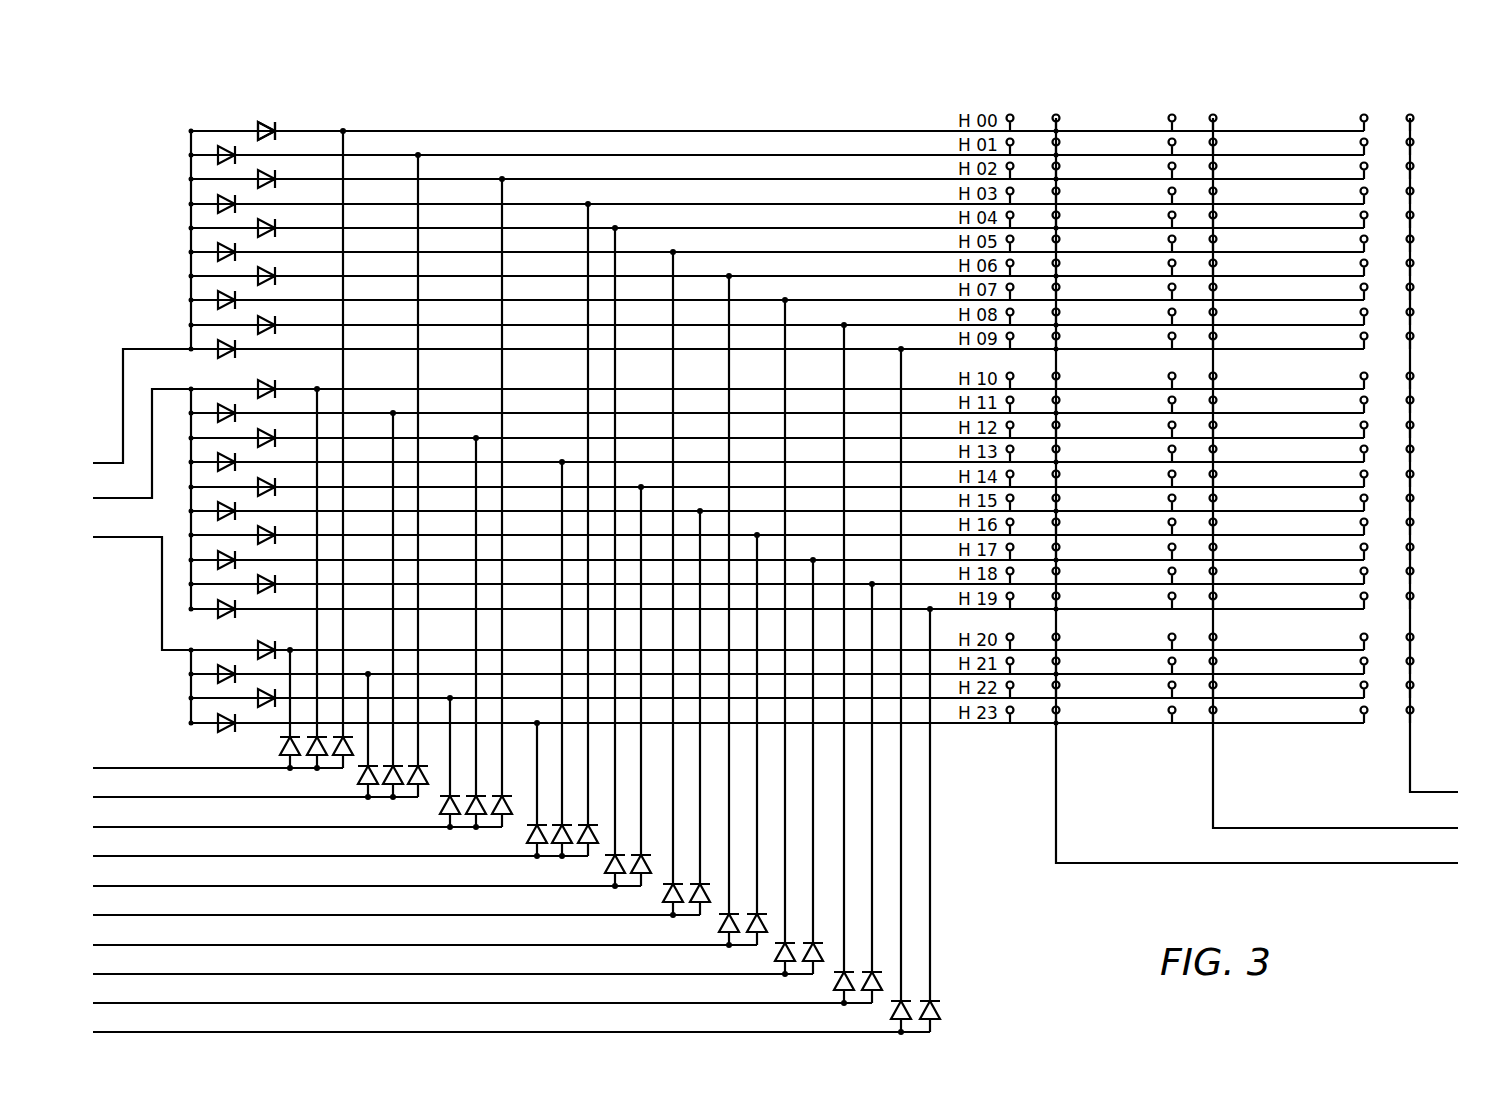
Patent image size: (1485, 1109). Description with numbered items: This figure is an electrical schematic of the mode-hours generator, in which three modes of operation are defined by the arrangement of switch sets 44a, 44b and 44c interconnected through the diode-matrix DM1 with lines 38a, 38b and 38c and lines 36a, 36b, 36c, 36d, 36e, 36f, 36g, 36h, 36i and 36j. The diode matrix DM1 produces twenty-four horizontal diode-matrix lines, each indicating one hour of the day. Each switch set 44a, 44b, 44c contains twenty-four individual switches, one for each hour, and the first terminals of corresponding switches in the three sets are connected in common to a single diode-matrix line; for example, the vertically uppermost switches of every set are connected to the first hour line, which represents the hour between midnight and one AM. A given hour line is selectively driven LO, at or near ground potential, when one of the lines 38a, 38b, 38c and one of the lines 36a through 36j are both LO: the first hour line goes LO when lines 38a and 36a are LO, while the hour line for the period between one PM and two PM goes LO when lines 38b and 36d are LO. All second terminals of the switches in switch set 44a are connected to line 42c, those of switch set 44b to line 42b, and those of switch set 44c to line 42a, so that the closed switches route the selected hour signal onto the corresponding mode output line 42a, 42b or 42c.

The diode-matrix DM1 is at (276, 177).
The line 38a is at (147, 335).
The line 38b is at (178, 377).
The line 38c is at (107, 545).
The line 36a is at (137, 767).
The line 36b is at (184, 796).
The line 36c is at (237, 826).
The line 36d is at (287, 855).
The line 36e is at (334, 885).
The line 36f is at (386, 914).
The line 36g is at (436, 944).
The line 36h is at (484, 973).
The line 36i is at (532, 1002).
The line 36j is at (582, 1031).
The switch set 44a is at (1035, 124).
The switch set 44b is at (1192, 124).
The switch set 44c is at (1388, 124).
The line 42a is at (1416, 792).
The line 42b is at (1234, 828).
The line 42c is at (1073, 863).